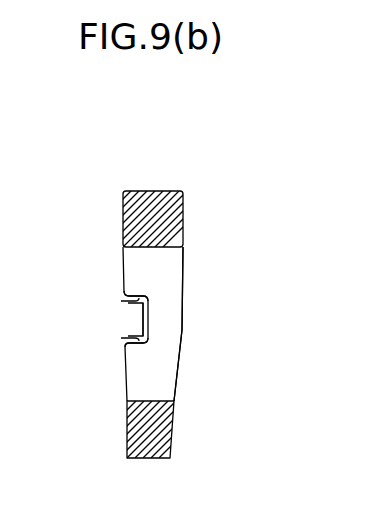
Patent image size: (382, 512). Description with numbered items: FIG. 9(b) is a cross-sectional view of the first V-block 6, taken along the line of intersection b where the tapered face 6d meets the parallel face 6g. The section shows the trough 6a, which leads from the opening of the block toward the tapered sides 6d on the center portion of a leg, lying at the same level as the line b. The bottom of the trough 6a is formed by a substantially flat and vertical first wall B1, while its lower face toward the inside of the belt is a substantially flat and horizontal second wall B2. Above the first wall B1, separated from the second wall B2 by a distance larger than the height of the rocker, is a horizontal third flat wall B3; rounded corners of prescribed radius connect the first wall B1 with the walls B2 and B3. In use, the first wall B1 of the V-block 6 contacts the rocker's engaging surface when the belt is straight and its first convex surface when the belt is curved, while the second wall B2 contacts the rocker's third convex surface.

The first V-block 6 is at (158, 192).
The parallel face 6g is at (183, 218).
The tapered sides 6d is at (174, 425).
The trough 6a is at (118, 323).
The line of intersection b is at (180, 323).
The first wall B1 is at (122, 307).
The second wall B2 is at (124, 334).
The third flat wall B3 is at (124, 301).